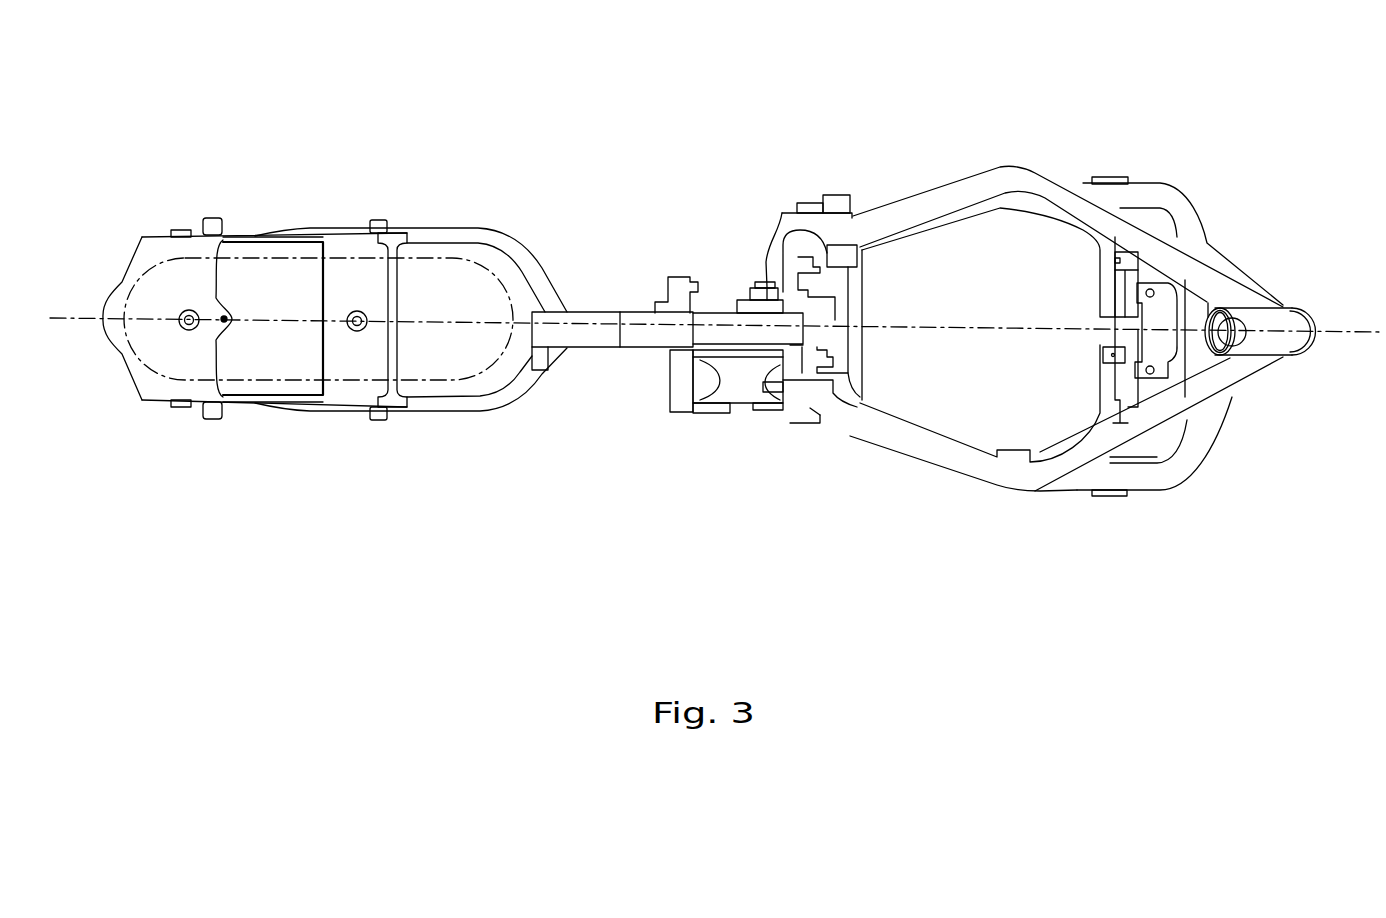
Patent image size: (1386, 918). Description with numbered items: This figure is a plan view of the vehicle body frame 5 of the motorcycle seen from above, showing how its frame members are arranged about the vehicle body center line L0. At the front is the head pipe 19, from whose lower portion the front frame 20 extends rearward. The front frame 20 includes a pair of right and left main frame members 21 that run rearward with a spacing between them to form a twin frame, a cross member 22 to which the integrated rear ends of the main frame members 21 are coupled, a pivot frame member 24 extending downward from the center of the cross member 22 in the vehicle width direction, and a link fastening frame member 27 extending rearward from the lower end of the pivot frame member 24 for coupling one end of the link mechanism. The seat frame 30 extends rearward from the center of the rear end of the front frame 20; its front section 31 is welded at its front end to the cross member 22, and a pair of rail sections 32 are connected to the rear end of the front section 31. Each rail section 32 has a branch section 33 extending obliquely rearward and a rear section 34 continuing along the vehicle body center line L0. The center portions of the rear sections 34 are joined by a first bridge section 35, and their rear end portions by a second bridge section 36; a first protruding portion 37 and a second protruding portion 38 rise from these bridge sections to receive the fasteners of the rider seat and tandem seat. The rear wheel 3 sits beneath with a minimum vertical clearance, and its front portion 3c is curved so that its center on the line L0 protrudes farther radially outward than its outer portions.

The rear wheel 3 is at (277, 380).
The front portion of the rear wheel 3c is at (543, 300).
The vehicle body frame 5 is at (885, 537).
The head pipe 19 is at (1285, 342).
The front frame 20 is at (1028, 495).
The main frame members 21 is at (1017, 170).
The cross member 22 is at (790, 420).
The pivot frame member 24 is at (717, 312).
The link fastening frame member 27 is at (740, 387).
The seat frame 30 is at (575, 348).
The front section 31 is at (600, 312).
The rail sections 32 is at (572, 73).
The branch sections 33 is at (540, 245).
The rear sections 34 is at (462, 207).
The first bridge section 35 is at (337, 240).
The second bridge section 36 is at (147, 237).
The first protruding portion 37 is at (357, 332).
The second protruding portion 38 is at (185, 330).
The vehicle body center line L0 is at (1357, 330).